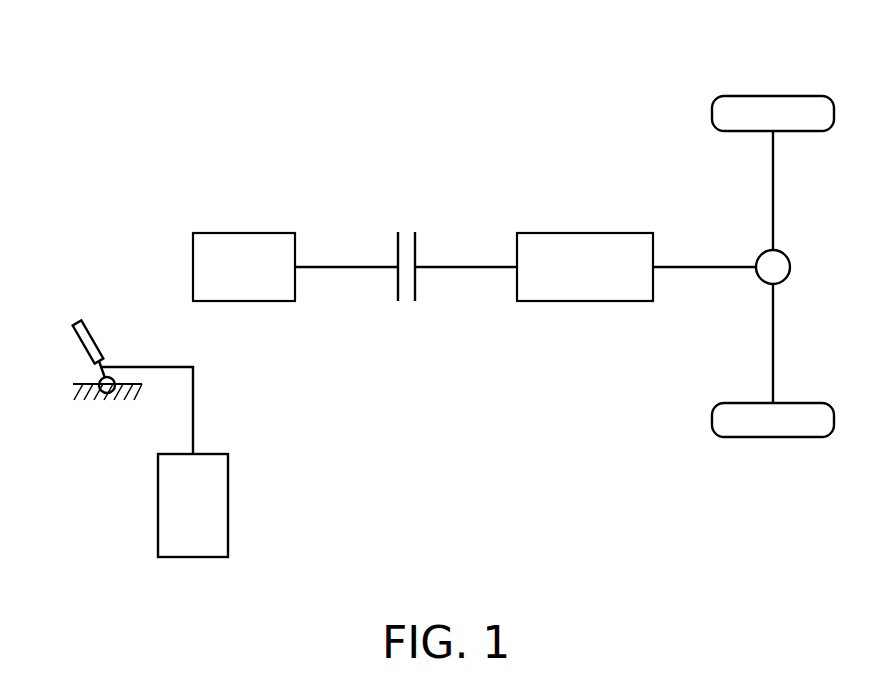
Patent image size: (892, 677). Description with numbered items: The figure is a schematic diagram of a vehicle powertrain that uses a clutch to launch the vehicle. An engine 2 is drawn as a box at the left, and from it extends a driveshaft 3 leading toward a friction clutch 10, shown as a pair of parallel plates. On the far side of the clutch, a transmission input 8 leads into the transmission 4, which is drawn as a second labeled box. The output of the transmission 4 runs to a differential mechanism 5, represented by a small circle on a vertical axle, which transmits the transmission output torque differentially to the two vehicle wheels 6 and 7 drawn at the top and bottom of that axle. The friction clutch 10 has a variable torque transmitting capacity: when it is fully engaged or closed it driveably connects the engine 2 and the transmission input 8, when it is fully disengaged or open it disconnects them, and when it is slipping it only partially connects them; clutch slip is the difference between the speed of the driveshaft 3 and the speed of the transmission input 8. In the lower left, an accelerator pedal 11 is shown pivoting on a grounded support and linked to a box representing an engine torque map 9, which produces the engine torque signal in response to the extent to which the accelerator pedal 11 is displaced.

The engine 2 is at (247, 301).
The driveshaft 3 is at (343, 265).
The transmission 4 is at (585, 301).
The differential mechanism 5 is at (791, 267).
The vehicle wheel 6 is at (783, 96).
The vehicle wheel 7 is at (768, 437).
The transmission input 8 is at (456, 265).
The engine torque map 9 is at (228, 500).
The friction clutch 10 is at (415, 292).
The accelerator pedal 11 is at (80, 337).